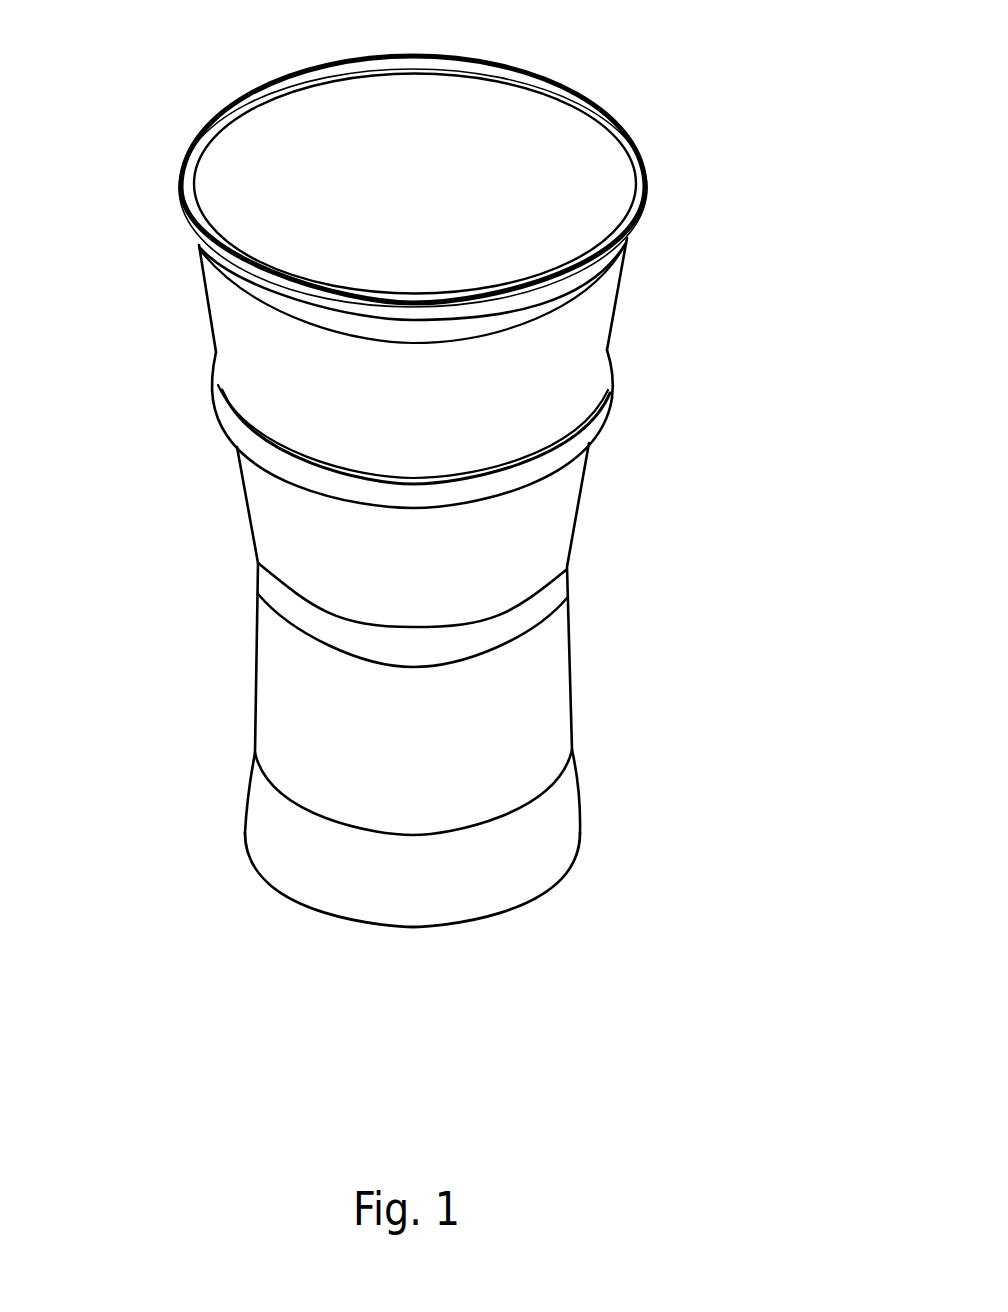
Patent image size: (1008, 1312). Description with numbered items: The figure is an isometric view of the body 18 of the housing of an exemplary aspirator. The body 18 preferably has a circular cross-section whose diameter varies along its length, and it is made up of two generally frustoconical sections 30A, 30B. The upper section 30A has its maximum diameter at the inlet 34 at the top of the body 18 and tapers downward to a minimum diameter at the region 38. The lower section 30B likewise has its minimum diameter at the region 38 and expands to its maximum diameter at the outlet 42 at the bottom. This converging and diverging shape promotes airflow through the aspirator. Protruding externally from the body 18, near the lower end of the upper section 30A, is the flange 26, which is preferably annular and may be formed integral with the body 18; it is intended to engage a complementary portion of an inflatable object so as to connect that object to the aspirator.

The body 18 is at (436, 487).
The inlet 34 is at (477, 168).
The frustoconical section 30A is at (221, 327).
The flange 26 is at (614, 396).
The region 38 is at (565, 576).
The frustoconical section 30B is at (262, 680).
The outlet 42 is at (280, 893).